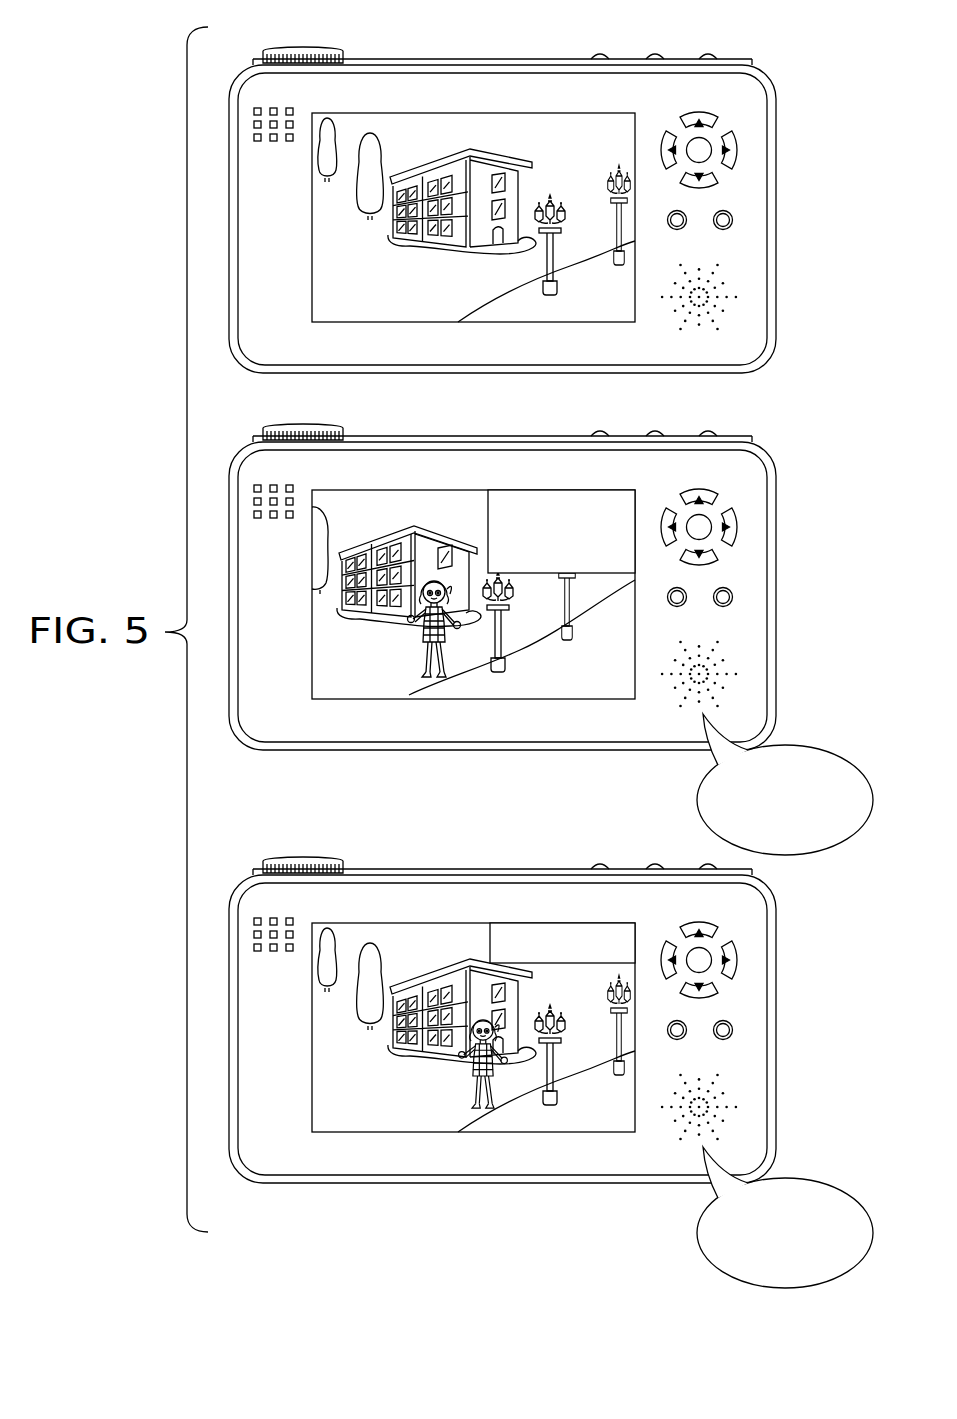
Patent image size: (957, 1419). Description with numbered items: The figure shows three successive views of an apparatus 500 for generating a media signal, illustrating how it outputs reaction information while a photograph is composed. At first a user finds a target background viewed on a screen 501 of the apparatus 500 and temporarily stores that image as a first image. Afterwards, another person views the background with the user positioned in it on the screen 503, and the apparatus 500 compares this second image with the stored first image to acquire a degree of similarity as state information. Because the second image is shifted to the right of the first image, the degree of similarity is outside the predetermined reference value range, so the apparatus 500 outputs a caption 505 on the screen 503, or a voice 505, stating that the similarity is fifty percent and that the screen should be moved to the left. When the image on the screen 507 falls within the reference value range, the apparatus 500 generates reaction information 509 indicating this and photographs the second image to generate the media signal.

The apparatus for generating a media signal 500 is at (502, 58).
The screen 501 is at (312, 254).
The screen 503 is at (312, 629).
The caption 505 is at (556, 490).
The screen 507 is at (312, 1062).
The reaction information 509 is at (556, 923).